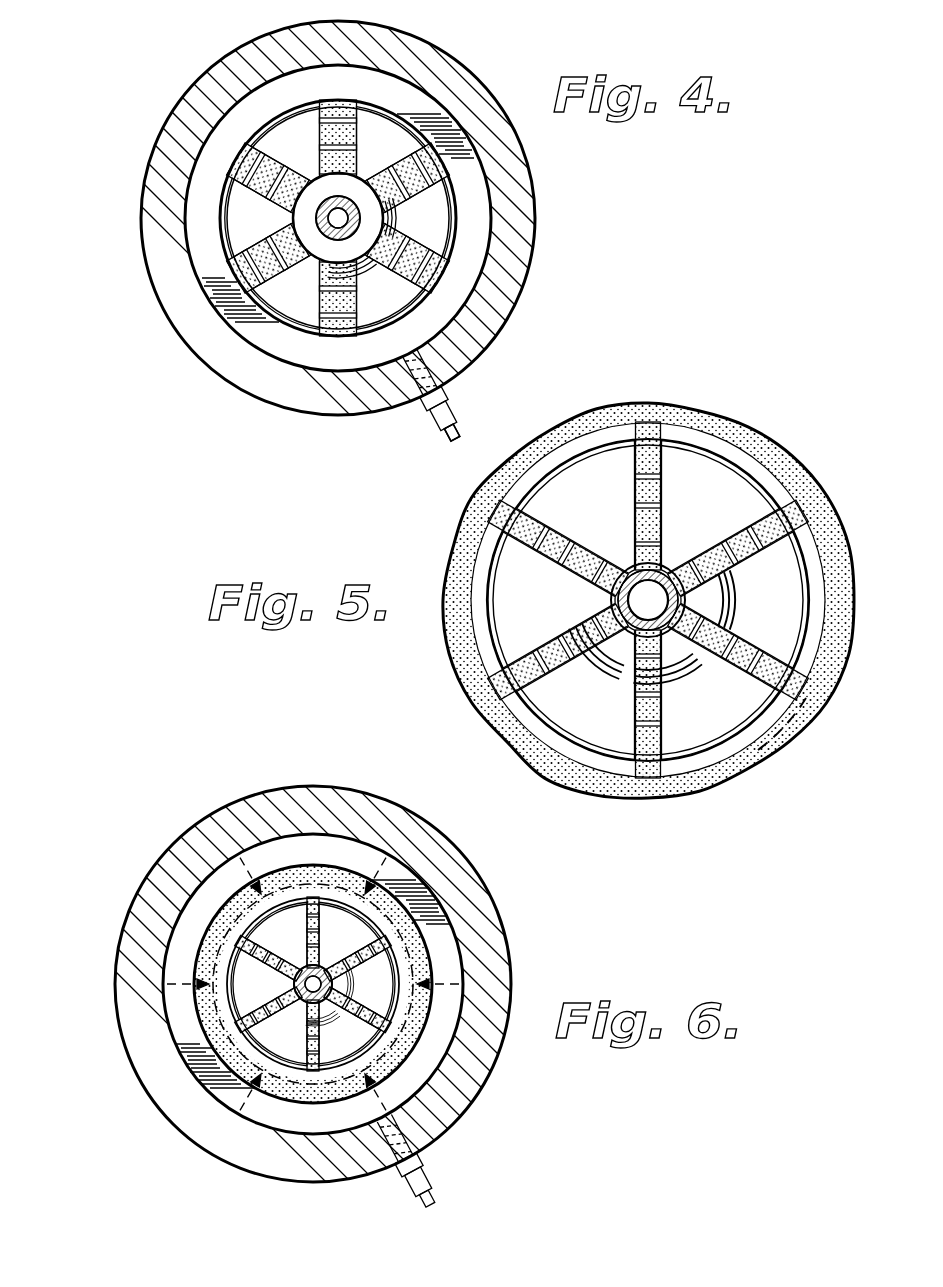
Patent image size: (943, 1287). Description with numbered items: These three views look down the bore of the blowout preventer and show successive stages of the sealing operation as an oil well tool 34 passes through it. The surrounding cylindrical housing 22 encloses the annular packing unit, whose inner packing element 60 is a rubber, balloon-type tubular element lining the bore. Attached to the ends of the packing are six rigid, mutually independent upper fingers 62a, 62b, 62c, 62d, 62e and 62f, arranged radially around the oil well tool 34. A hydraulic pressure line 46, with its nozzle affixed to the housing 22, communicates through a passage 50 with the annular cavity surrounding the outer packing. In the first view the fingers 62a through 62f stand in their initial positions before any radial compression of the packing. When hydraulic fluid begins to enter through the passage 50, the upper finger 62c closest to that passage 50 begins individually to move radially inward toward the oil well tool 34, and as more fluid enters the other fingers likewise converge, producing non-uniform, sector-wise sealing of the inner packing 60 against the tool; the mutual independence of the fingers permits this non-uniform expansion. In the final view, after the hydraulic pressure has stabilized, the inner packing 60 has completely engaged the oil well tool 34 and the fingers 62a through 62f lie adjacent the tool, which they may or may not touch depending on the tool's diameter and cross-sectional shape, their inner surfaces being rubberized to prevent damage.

In FIG. 4, the cylindrical housing 22 is at (175, 135).
In FIG. 6, the cylindrical housing 22 is at (265, 812).
In FIG. 4, the oil well tool 34 is at (357, 227).
In FIG. 5, the oil well tool 34 is at (668, 578).
In FIG. 6, the oil well tool 34 is at (332, 990).
In FIG. 4, the hydraulic pressure line 46 is at (452, 448).
In FIG. 4, the passage 50 is at (468, 348).
In FIG. 6, the passage 50 is at (425, 1130).
In FIG. 5, the inner packing element 60 is at (840, 945).
In FIG. 6, the inner packing element 60 is at (215, 927).
In FIG. 4, the upper finger 62a is at (372, 135).
In FIG. 5, the upper finger 62a is at (690, 473).
In FIG. 6, the upper finger 62a is at (327, 913).
In FIG. 4, the upper finger 62b is at (430, 200).
In FIG. 5, the upper finger 62b is at (763, 582).
In FIG. 6, the upper finger 62b is at (367, 967).
In FIG. 4, the upper finger 62c is at (372, 300).
In FIG. 5, the upper finger 62c is at (708, 700).
In FIG. 6, the upper finger 62c is at (343, 1027).
In FIG. 4, the upper finger 62d is at (285, 292).
In FIG. 5, the upper finger 62d is at (577, 707).
In FIG. 6, the upper finger 62d is at (275, 1020).
In FIG. 4, the upper finger 62e is at (245, 215).
In FIG. 5, the upper finger 62e is at (525, 600).
In FIG. 6, the upper finger 62e is at (250, 978).
In FIG. 4, the upper finger 62f is at (285, 140).
In FIG. 5, the upper finger 62f is at (586, 478).
In FIG. 6, the upper finger 62f is at (272, 928).